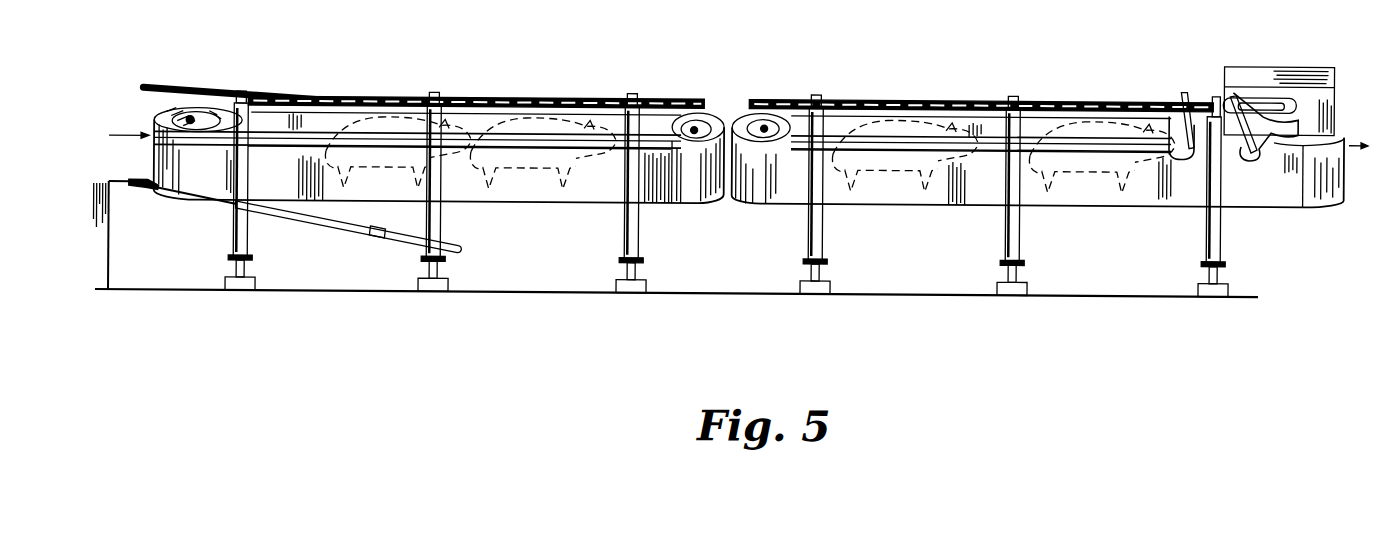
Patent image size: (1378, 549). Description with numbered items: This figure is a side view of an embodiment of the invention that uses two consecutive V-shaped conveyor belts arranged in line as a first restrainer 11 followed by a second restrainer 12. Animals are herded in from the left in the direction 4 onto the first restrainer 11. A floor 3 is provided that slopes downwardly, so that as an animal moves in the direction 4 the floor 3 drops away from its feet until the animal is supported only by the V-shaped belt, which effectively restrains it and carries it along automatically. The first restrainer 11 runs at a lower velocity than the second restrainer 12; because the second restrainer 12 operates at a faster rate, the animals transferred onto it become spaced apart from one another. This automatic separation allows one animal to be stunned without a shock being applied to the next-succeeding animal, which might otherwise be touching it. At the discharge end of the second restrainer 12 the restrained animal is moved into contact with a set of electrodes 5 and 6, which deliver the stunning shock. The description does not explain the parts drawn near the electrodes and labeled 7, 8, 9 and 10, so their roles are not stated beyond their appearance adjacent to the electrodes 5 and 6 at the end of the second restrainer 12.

The floor 3 is at (392, 238).
The direction of animal movement 4 is at (129, 126).
The electrode 5 is at (1187, 90).
The electrode 6 is at (1235, 85).
The electrode hook 7 is at (1180, 94).
The second pivoting arm 8 is at (1213, 86).
The support block 9 is at (1195, 90).
The clamp rail 10 is at (1255, 88).
The first restrainer 11 is at (518, 191).
The second restrainer 12 is at (1260, 193).